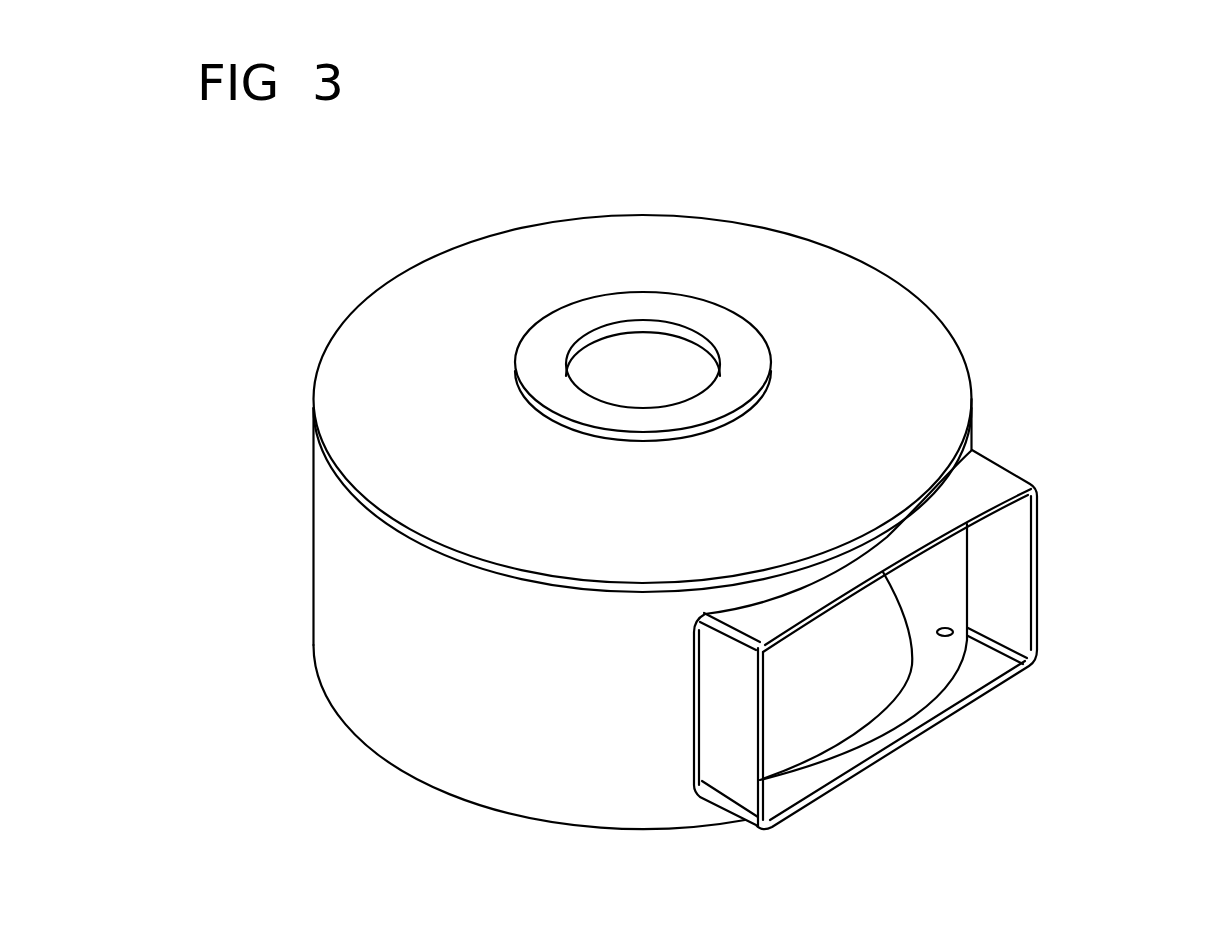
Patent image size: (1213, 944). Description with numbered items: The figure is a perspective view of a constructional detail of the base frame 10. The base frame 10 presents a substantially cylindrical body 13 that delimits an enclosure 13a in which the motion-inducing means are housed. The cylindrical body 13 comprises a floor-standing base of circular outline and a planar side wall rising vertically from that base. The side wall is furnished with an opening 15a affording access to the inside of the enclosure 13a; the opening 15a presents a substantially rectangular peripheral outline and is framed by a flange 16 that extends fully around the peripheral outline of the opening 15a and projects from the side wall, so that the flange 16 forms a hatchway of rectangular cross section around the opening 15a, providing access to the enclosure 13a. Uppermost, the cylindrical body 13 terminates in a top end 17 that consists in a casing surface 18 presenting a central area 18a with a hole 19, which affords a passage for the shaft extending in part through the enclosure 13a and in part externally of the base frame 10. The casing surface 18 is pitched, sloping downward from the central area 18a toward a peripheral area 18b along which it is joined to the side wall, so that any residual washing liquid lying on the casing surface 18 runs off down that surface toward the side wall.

The base frame 10 is at (408, 665).
The cylindrical body 13 is at (495, 745).
The enclosure 13a is at (787, 740).
The opening 15a is at (873, 667).
The flange 16 is at (1040, 540).
The top end 17 is at (322, 334).
The casing surface 18 is at (417, 308).
The central area 18a is at (695, 315).
The peripheral area 18b is at (887, 280).
The hole 19 is at (617, 367).